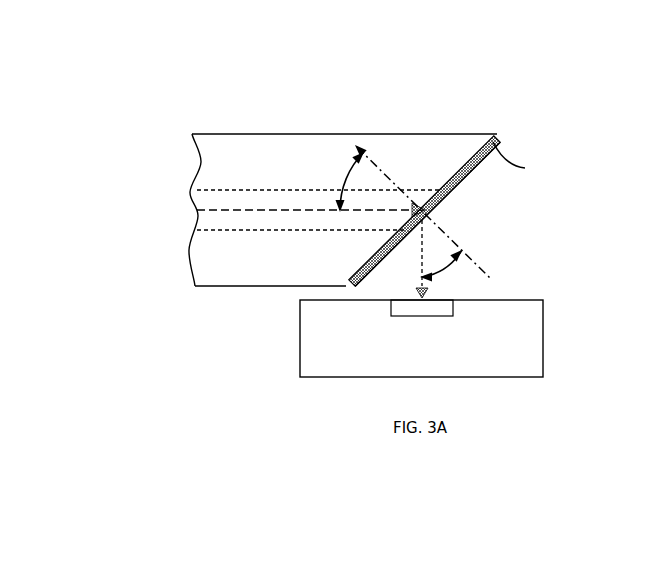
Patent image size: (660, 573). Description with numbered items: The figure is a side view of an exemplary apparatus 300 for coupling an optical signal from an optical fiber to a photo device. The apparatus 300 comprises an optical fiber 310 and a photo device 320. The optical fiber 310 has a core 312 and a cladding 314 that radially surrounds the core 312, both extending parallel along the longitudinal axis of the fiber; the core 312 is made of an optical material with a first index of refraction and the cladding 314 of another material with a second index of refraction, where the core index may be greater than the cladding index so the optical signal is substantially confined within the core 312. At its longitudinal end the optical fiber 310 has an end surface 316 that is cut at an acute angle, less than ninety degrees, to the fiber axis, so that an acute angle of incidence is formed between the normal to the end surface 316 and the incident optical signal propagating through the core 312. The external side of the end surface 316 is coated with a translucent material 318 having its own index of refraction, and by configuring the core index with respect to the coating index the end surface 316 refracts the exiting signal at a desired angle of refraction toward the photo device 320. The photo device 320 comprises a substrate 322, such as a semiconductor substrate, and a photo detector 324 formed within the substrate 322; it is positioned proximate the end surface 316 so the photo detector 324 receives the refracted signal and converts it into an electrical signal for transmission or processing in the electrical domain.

The apparatus 300 is at (472, 120).
The optical fiber 310 is at (300, 128).
The core 312 is at (213, 218).
The cladding 314 is at (213, 168).
The end surface 316 is at (450, 187).
The translucent material 318 is at (475, 163).
The photo device 320 is at (537, 296).
The substrate 322 is at (522, 338).
The photo detector 324 is at (423, 316).